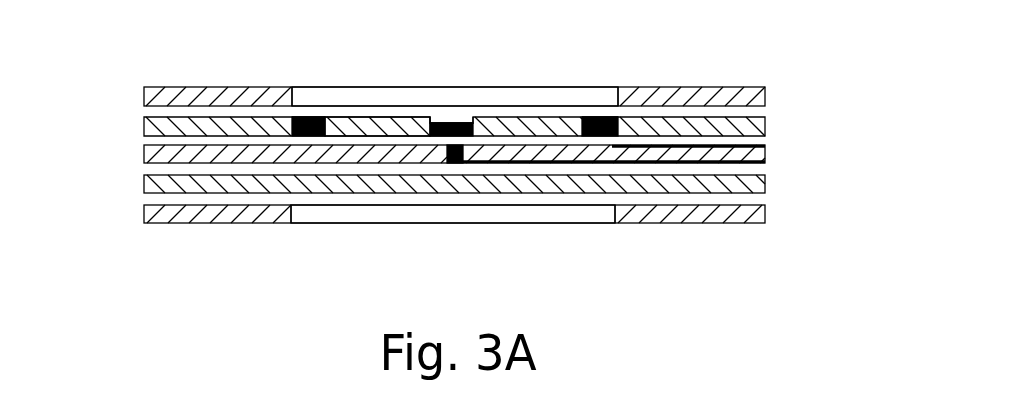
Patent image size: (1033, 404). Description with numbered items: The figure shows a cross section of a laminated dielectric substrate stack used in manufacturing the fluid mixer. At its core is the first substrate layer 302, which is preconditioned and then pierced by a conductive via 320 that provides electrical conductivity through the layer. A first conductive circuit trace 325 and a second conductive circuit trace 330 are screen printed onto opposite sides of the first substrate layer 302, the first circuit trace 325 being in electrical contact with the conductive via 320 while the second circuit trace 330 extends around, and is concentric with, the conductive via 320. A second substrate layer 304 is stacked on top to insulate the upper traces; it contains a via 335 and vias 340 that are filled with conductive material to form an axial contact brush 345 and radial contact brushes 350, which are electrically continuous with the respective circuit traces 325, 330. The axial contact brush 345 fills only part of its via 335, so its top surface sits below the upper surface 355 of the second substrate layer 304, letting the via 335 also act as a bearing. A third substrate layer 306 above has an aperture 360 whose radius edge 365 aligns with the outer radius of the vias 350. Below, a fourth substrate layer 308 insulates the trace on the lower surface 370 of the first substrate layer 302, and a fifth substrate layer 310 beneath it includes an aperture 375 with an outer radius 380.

The third substrate layer 306 is at (765, 100).
The second substrate layer 304 is at (765, 128).
The first substrate layer 302 is at (765, 157).
The fourth substrate layer 308 is at (765, 185).
The fifth substrate layer 310 is at (765, 213).
The via 340 is at (324, 106).
The radial contact brush 350 is at (312, 118).
The via 335 is at (444, 110).
The axial contact brush 345 is at (463, 125).
The upper surface 355 is at (357, 120).
The aperture 360 is at (510, 95).
The radius edge 365 is at (302, 92).
The lower surface 370 is at (145, 168).
The outer radius 380 is at (293, 213).
The aperture 375 is at (478, 212).
The conductive via 320 is at (447, 163).
The first conductive circuit trace 325 is at (568, 163).
The second conductive circuit trace 330 is at (680, 143).